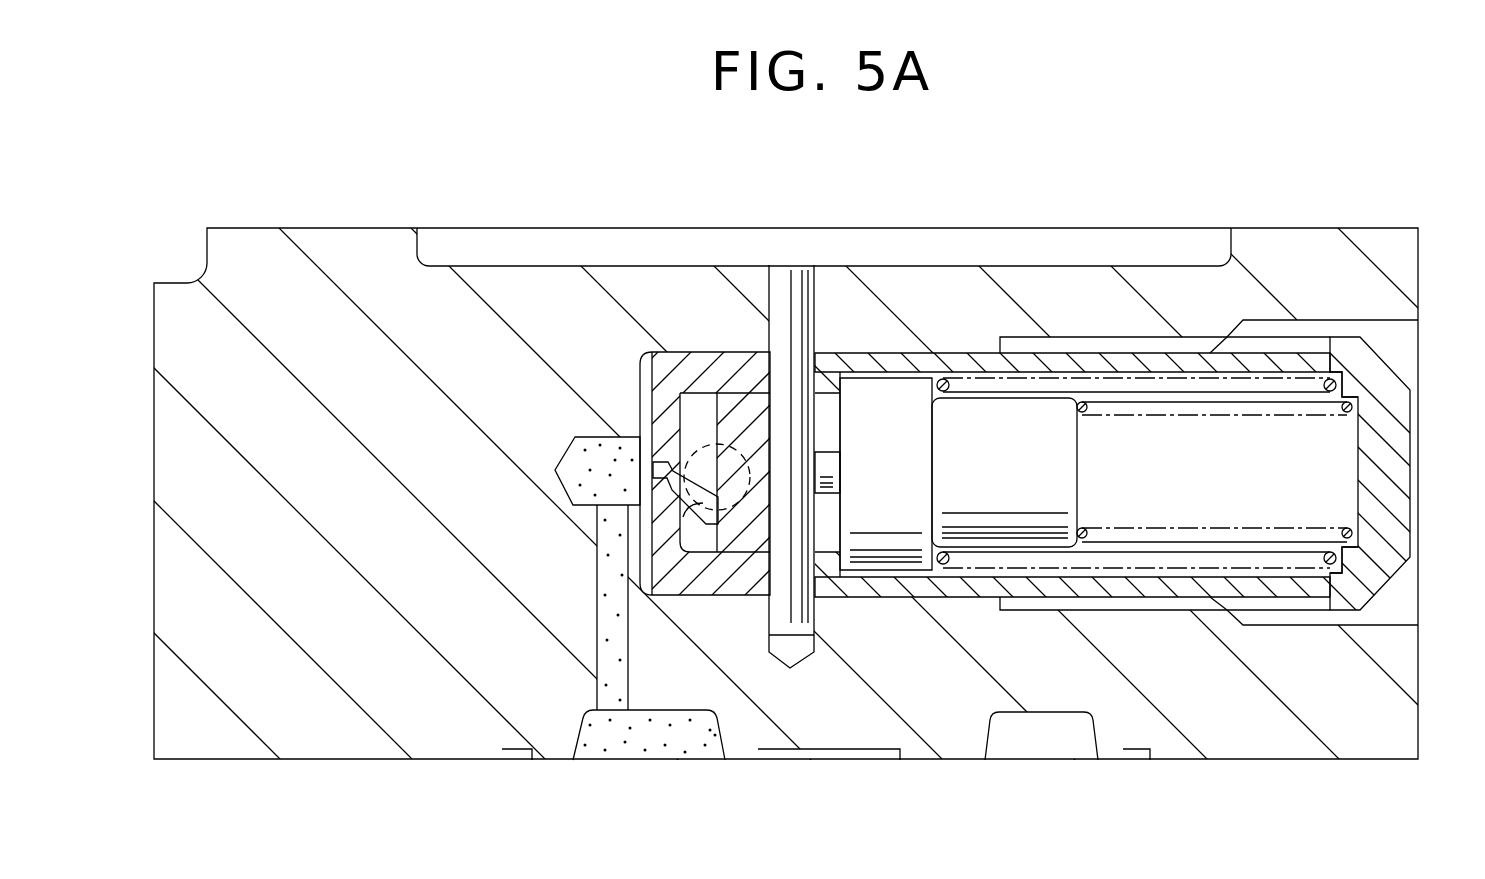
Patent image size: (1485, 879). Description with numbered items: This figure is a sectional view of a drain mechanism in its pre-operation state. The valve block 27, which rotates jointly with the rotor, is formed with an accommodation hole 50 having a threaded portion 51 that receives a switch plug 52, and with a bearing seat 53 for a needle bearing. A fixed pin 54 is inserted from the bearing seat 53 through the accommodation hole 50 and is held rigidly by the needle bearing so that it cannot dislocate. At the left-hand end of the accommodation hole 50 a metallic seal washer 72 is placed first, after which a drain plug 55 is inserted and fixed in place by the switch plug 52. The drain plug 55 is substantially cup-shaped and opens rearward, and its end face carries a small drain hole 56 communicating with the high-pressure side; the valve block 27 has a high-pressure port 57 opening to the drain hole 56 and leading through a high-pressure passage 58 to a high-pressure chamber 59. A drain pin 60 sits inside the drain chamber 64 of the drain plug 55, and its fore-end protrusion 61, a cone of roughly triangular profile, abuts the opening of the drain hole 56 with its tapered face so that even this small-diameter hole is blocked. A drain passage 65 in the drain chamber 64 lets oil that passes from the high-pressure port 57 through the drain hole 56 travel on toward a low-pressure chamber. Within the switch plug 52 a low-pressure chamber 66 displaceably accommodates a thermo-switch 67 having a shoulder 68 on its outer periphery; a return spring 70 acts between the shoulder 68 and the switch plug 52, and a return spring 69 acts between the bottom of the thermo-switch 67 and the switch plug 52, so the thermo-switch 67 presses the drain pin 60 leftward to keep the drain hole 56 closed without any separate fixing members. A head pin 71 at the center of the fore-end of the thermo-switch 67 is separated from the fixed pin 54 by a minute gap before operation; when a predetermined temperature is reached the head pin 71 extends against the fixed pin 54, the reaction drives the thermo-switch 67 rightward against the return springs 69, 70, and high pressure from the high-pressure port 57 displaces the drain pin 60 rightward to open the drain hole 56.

The valve block 27 is at (285, 717).
The accommodation hole 50 is at (855, 590).
The threaded portion 51 is at (1125, 605).
The switch plug 52 is at (1228, 597).
The bearing seat 53 is at (470, 248).
The fixed pin 54 is at (787, 303).
The drain plug 55 is at (692, 577).
The drain hole 56 is at (590, 370).
The high-pressure port 57 is at (598, 492).
The high-pressure passage 58 is at (612, 623).
The high-pressure chamber 59 is at (643, 740).
The drain pin 60 is at (737, 392).
The protrusion 61 is at (735, 405).
The drain chamber 64 is at (687, 407).
The drain passage 65 is at (700, 505).
The low-pressure chamber 66 is at (1150, 447).
The thermo-switch 67 is at (1003, 437).
The shoulder 68 is at (932, 497).
The return spring 69 is at (1365, 407).
The return spring 70 is at (1347, 378).
The head pin 71 is at (833, 465).
The metallic seal washer 72 is at (655, 440).